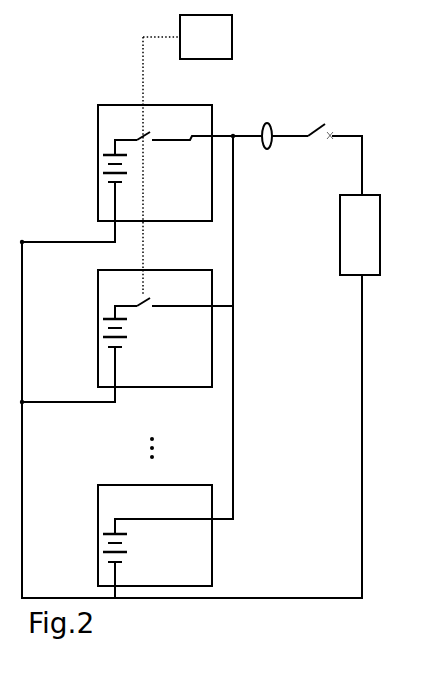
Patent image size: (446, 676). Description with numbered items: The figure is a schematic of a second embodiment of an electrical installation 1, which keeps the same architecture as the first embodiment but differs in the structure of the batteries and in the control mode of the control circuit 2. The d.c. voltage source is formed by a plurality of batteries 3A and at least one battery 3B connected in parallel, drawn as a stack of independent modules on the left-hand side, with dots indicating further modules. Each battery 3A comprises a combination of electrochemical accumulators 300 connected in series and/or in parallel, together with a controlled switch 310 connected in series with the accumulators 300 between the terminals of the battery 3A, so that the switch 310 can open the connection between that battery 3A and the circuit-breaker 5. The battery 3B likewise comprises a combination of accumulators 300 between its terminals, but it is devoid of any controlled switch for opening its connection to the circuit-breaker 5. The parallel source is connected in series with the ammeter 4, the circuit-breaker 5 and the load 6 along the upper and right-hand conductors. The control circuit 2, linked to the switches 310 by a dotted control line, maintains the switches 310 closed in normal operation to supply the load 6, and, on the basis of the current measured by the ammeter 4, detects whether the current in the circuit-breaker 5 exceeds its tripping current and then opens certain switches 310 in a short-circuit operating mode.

The electrical installation 1 is at (76, 72).
The control circuit 2 is at (195, 50).
The battery 3A is at (98, 163).
The battery 3B is at (98, 543).
The ammeter 4 is at (267, 112).
The circuit-breaker 5 is at (317, 108).
The load 6 is at (353, 246).
The electrochemical accumulators 300 is at (128, 170).
The controlled switch 310 is at (139, 135).